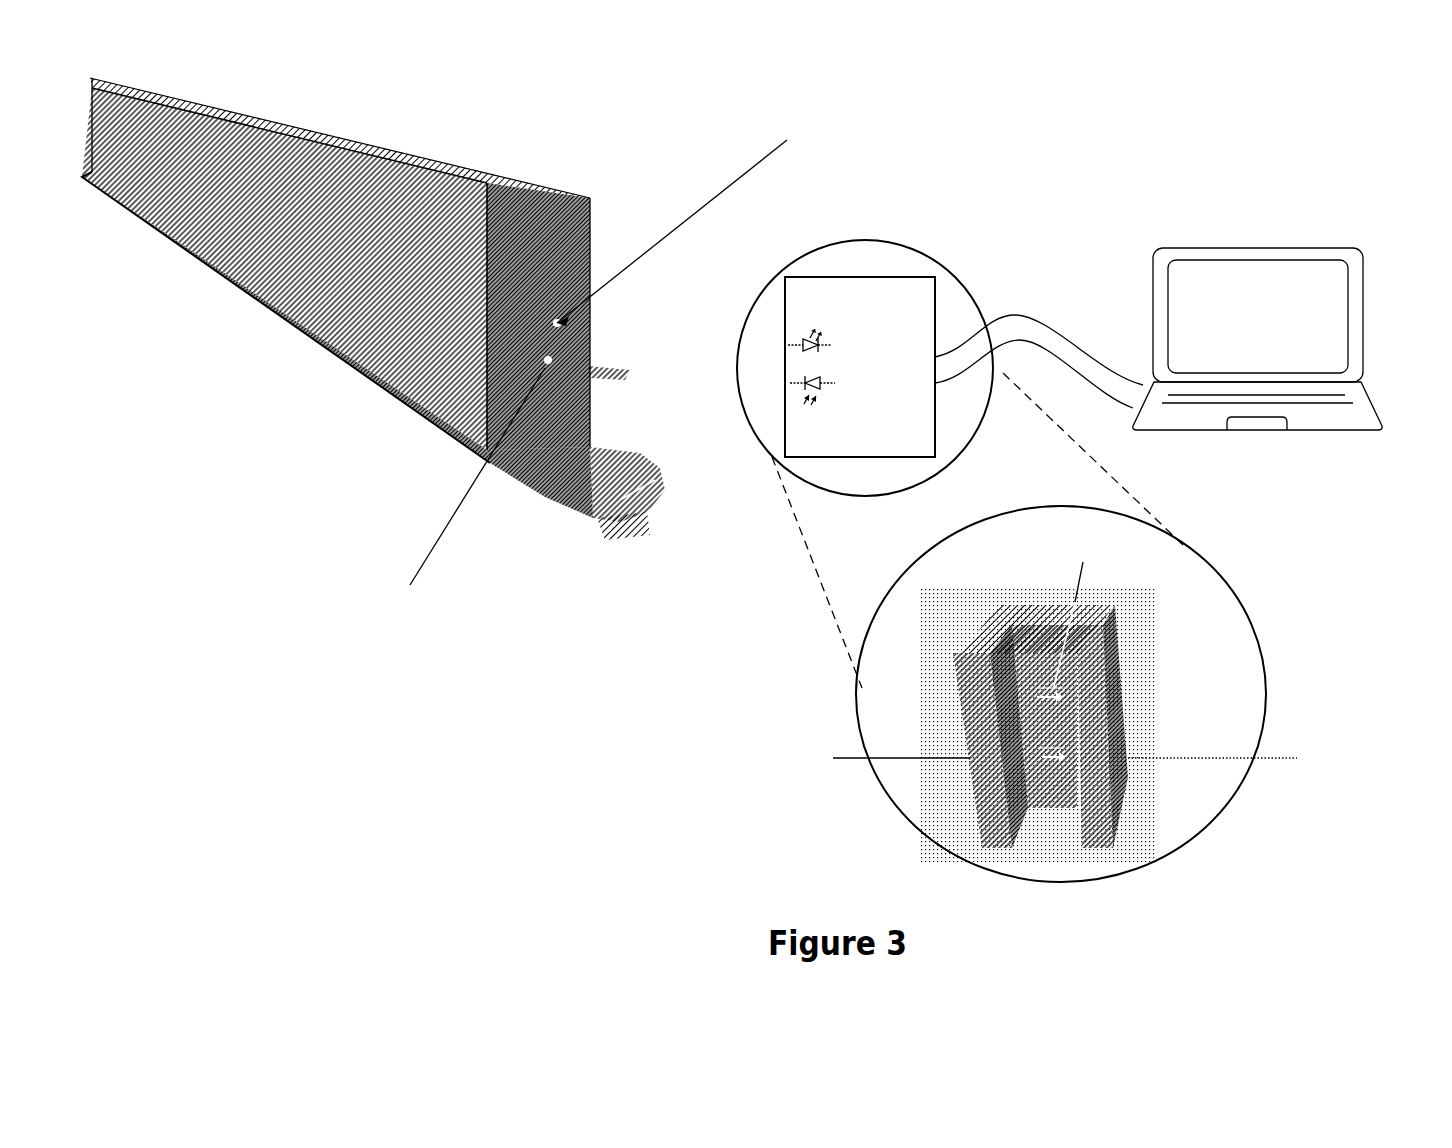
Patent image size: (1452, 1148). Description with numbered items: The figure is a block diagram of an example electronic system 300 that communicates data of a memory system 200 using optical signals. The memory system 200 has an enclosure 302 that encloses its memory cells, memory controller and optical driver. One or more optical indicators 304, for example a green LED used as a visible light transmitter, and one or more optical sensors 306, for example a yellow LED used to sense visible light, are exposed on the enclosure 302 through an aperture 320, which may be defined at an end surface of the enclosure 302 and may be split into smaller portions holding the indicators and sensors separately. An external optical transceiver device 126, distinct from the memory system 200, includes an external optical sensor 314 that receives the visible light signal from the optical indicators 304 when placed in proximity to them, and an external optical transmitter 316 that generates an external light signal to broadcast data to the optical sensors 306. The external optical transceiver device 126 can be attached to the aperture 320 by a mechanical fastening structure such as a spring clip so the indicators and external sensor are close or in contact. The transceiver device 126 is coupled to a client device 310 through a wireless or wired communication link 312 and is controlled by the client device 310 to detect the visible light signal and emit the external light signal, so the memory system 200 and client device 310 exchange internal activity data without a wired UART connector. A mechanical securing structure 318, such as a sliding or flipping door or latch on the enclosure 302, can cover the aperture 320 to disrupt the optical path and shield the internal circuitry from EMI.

The memory system 200 is at (556, 367).
The electronic system 300 is at (1094, 463).
The enclosure 302 is at (286, 130).
The optical indicator 304 is at (555, 323).
The optical sensor 306 is at (549, 358).
The client device 310 is at (1332, 250).
The communication link 312 is at (1025, 325).
The external optical sensor 314 is at (828, 359).
The external optical transmitter 316 is at (812, 410).
The mechanical securing structure 318 is at (637, 473).
The aperture 320 is at (567, 352).
The external optical transceiver device 126 is at (925, 495).